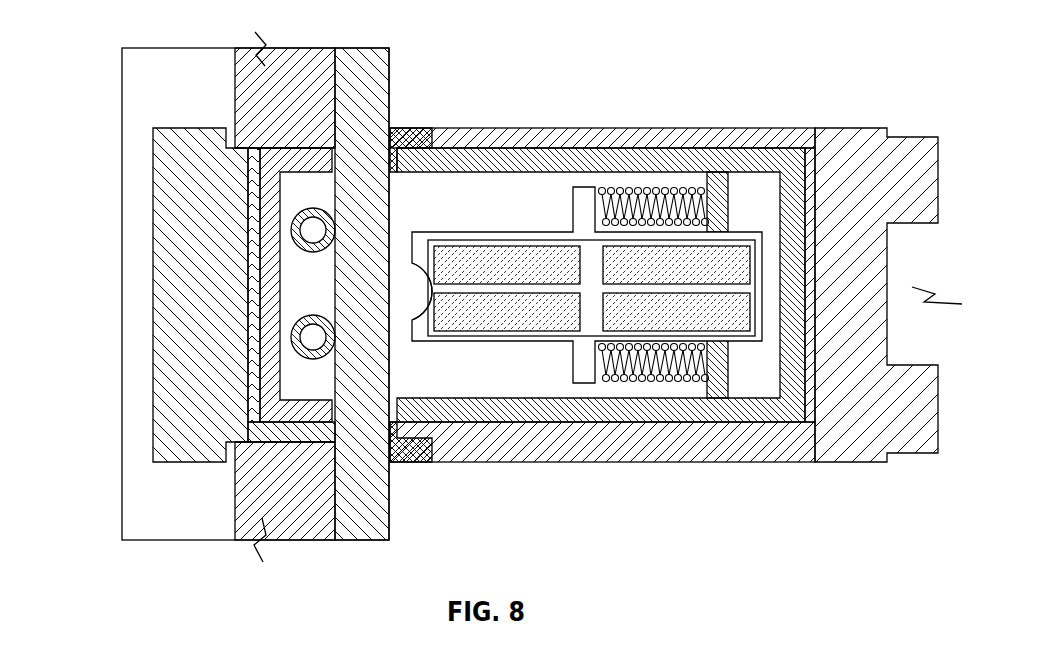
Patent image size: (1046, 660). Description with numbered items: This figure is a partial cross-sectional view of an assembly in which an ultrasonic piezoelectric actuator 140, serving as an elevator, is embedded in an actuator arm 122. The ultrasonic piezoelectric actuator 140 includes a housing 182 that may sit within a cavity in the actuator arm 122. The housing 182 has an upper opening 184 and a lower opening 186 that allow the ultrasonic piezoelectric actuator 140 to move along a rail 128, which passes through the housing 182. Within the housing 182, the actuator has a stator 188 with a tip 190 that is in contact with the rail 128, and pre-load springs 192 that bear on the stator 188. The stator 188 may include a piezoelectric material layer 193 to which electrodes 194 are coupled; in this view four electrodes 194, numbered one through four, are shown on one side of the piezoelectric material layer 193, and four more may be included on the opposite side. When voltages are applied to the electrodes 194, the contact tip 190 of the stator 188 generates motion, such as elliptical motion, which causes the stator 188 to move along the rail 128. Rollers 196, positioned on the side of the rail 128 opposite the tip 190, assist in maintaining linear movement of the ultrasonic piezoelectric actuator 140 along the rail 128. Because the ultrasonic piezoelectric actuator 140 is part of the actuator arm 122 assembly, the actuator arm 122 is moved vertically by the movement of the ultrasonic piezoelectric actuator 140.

The actuator arm 122 is at (858, 440).
The rail 128 is at (348, 495).
The ultrasonic piezoelectric actuator 140 is at (628, 126).
The housing 182 is at (660, 410).
The upper opening 184 is at (397, 135).
The lower opening 186 is at (413, 460).
The stator 188 is at (472, 232).
The tip 190 is at (402, 293).
The pre-load springs 192 is at (662, 190).
The piezoelectric material layer 193 is at (735, 238).
The electrodes 194 is at (626, 262).
The rollers 196 is at (296, 338).